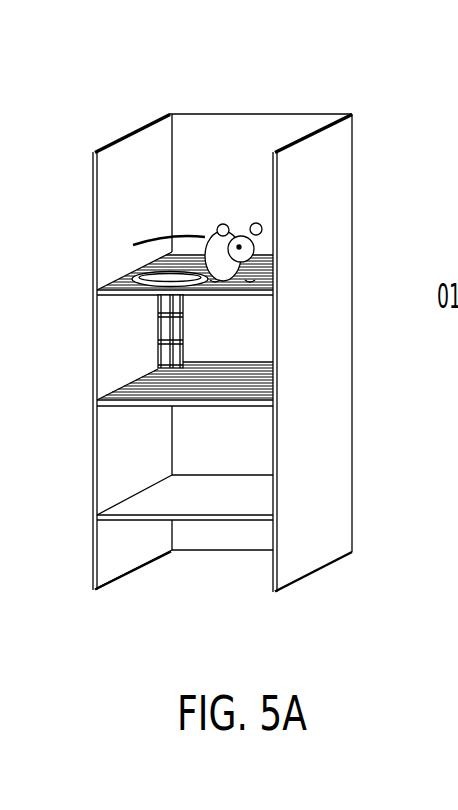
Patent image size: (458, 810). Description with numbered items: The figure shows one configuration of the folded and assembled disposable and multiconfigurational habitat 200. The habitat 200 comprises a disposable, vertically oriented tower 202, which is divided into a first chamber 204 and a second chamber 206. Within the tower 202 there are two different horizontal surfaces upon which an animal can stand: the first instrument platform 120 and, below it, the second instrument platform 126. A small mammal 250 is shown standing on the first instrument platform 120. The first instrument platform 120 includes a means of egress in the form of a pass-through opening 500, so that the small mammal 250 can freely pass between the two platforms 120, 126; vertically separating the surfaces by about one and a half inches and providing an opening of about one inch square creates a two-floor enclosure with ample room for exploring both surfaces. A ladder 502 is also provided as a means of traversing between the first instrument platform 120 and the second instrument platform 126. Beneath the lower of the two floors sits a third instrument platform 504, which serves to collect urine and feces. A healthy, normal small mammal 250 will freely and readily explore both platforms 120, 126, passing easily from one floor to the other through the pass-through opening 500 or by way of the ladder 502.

The habitat 200 is at (388, 110).
The tower 202 is at (187, 127).
The first chamber 204 is at (244, 134).
The first instrument platform 120 is at (271, 290).
The pass-through opening 500 is at (137, 275).
The small mammal 250 is at (258, 233).
The ladder 502 is at (158, 317).
The second instrument platform 126 is at (235, 403).
The second chamber 206 is at (255, 334).
The third instrument platform 504 is at (187, 505).